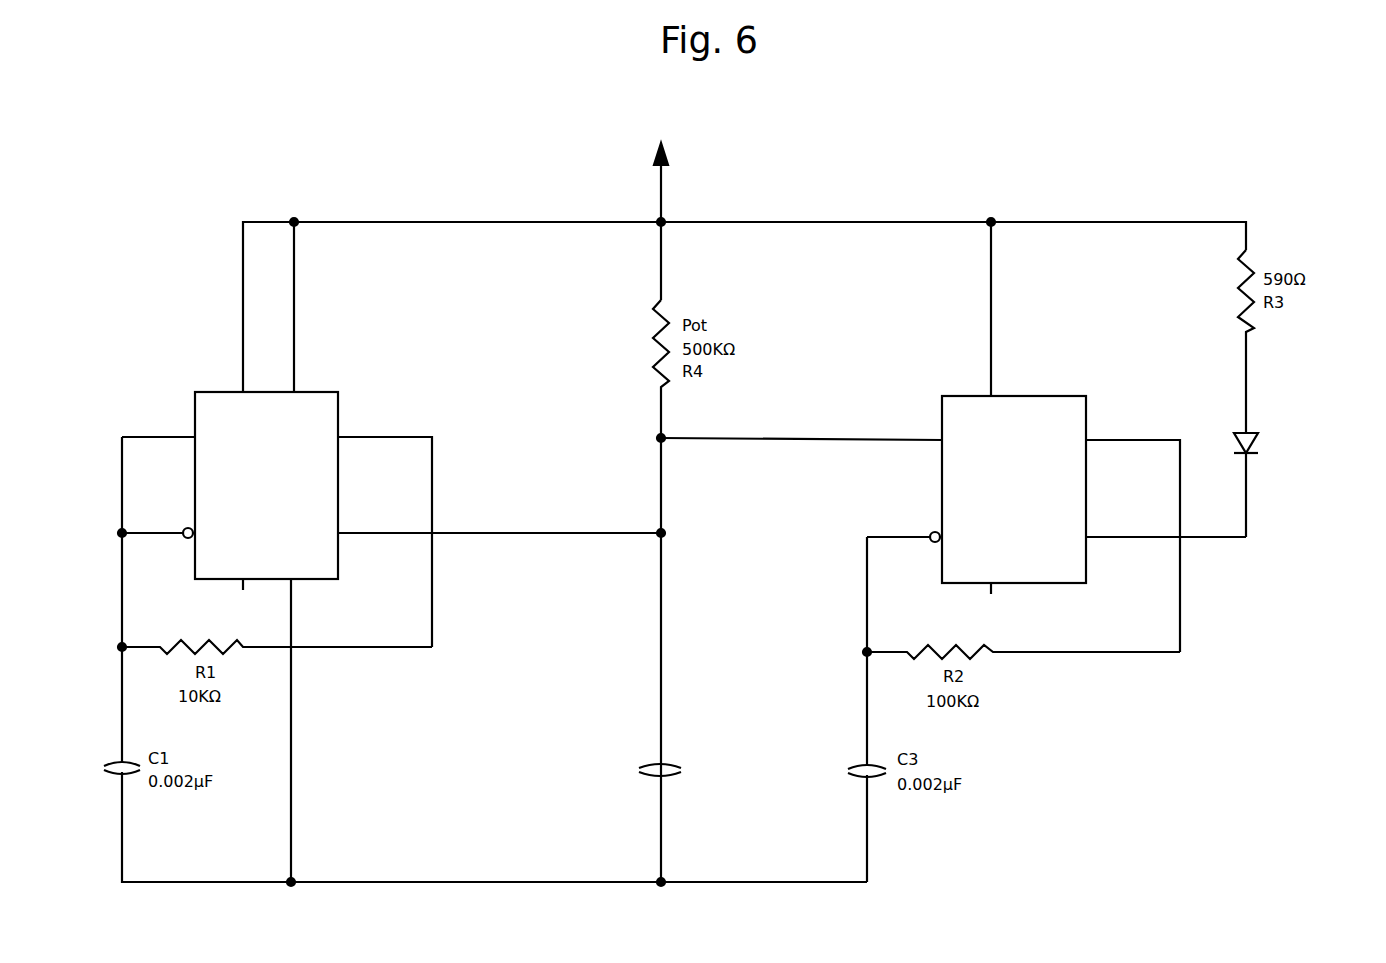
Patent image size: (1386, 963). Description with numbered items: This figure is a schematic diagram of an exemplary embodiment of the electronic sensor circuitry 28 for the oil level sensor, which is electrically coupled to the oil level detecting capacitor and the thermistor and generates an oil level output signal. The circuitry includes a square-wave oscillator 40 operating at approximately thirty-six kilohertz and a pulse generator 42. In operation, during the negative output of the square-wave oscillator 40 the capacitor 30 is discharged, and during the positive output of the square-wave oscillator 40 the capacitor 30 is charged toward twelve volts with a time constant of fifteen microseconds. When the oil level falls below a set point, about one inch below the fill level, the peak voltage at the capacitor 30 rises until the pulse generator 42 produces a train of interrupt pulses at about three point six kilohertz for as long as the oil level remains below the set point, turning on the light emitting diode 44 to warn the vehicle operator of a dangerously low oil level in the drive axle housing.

The electronic sensor circuitry 28 is at (920, 194).
The capacitor 30 is at (674, 756).
The square-wave oscillator 40 is at (355, 473).
The pulse generator 42 is at (1032, 368).
The light emitting diode 44 is at (1300, 423).